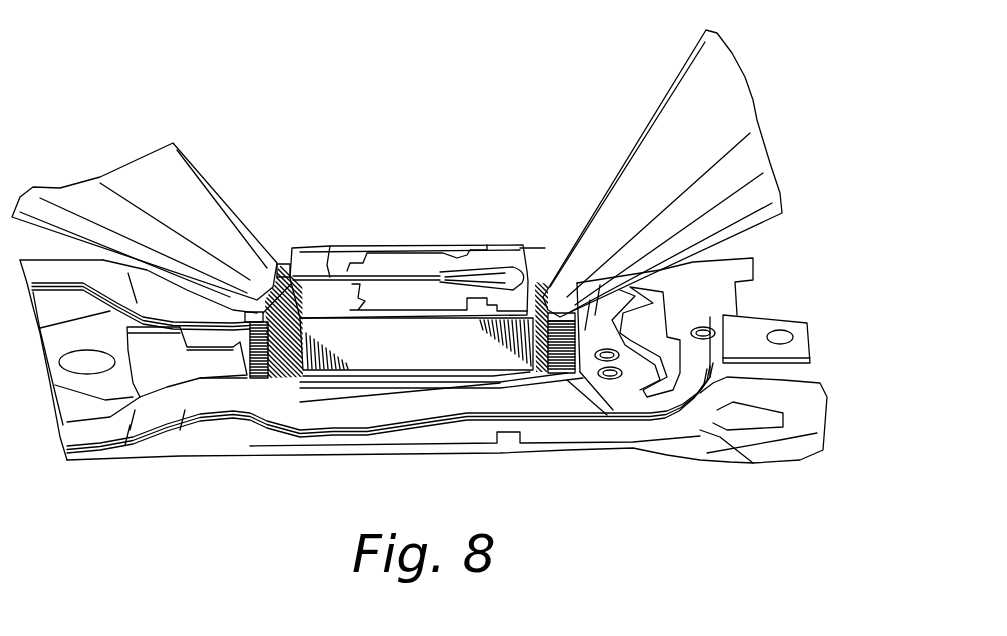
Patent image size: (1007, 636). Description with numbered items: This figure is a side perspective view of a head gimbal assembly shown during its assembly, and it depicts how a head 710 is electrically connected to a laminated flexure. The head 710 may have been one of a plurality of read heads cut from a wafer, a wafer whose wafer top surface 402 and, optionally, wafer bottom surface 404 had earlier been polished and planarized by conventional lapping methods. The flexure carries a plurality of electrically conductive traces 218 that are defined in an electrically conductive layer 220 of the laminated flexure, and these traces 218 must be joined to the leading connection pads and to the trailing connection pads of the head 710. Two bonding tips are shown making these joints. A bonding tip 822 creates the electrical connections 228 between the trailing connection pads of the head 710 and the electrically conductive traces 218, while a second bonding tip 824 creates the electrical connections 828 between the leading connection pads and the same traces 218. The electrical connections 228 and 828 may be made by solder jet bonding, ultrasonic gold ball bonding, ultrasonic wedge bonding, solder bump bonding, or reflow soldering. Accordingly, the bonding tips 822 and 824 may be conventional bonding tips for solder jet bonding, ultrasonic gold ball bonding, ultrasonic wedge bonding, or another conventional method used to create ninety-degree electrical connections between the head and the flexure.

The bonding tip 822 is at (137, 163).
The bonding tip 824 is at (728, 57).
The wafer top surface 402 is at (280, 263).
The wafer bottom surface 404 is at (542, 250).
The head 710 is at (417, 258).
The electrically conductive layer 220 is at (790, 325).
The electrically conductive traces 218 is at (262, 345).
The electrical connections 228 is at (290, 370).
The electrical connections 828 is at (547, 365).